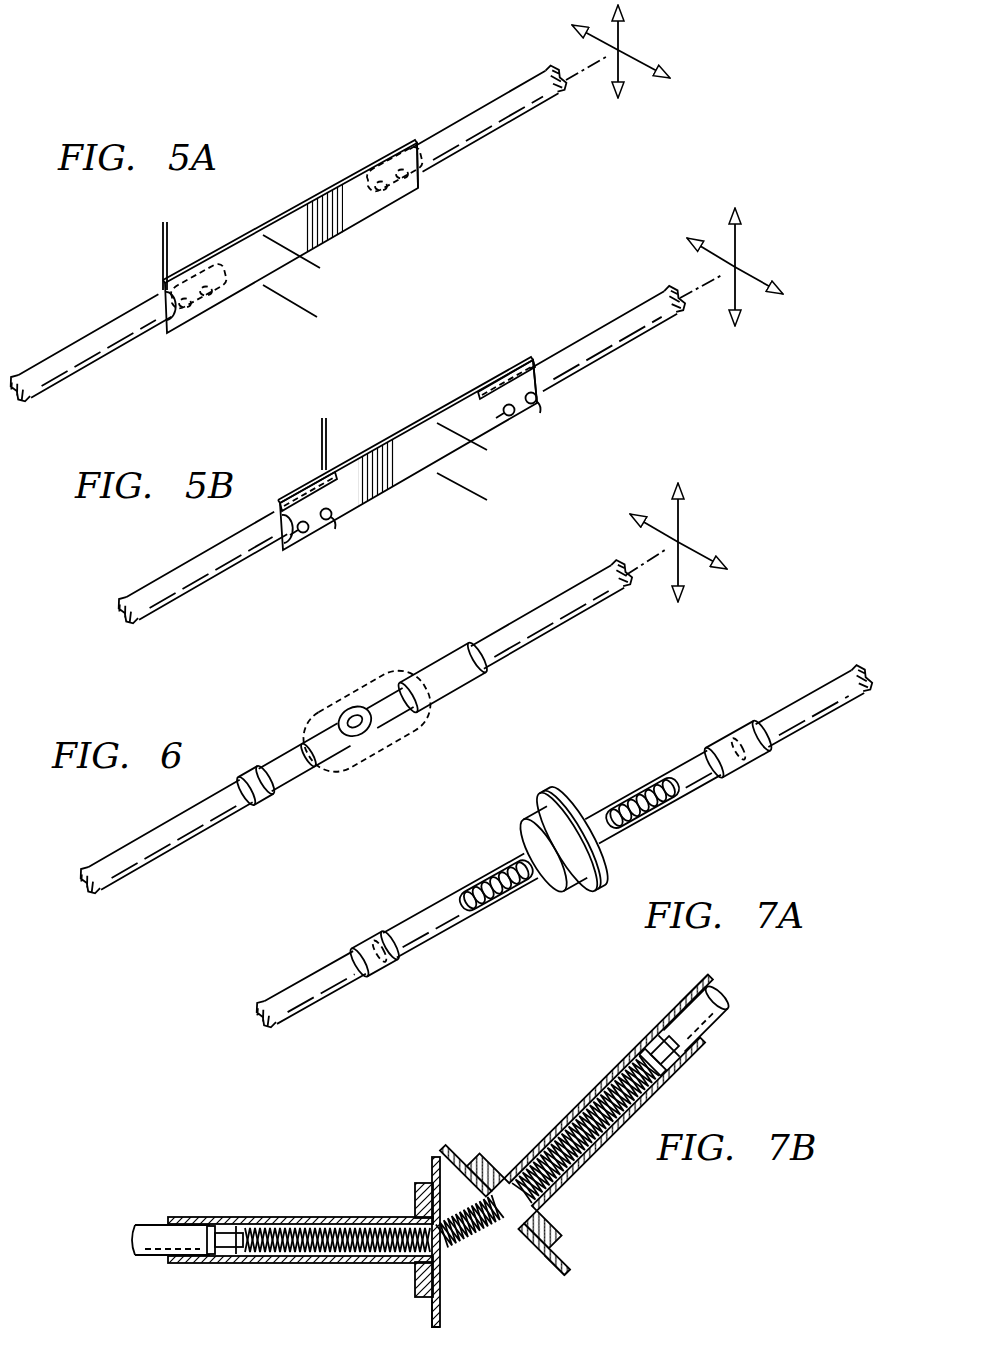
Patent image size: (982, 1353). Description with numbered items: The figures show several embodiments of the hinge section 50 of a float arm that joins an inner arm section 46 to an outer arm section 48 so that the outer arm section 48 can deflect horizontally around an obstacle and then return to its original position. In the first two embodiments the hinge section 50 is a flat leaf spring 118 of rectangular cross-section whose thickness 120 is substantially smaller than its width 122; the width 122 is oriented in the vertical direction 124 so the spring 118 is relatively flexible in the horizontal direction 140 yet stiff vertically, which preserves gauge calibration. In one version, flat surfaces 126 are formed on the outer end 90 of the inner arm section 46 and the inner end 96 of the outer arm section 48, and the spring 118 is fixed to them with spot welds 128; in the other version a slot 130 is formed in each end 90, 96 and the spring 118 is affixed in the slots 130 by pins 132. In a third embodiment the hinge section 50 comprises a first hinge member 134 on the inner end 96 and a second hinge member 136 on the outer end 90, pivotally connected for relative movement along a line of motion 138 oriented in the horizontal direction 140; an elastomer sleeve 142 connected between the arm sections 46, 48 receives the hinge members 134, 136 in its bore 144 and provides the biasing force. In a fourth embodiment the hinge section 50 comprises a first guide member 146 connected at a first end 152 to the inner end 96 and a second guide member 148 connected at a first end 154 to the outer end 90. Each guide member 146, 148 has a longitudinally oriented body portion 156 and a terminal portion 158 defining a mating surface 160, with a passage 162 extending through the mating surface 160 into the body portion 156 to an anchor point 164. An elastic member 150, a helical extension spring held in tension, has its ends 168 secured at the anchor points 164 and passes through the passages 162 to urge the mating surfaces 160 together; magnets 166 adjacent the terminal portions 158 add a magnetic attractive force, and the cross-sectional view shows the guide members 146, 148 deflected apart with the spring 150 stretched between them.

In FIG. 5A, the inner arm section 46 is at (60, 355).
In FIG. 5B, the inner arm section 46 is at (188, 561).
In FIG. 6, the inner arm section 46 is at (142, 832).
In FIG. 7A, the inner arm section 46 is at (303, 977).
In FIG. 7B, the inner arm section 46 is at (152, 1222).
In FIG. 5A, the outer arm section 48 is at (475, 117).
In FIG. 5B, the outer arm section 48 is at (627, 310).
In FIG. 6, the outer arm section 48 is at (565, 590).
In FIG. 7A, the outer arm section 48 is at (810, 685).
In FIG. 7B, the outer arm section 48 is at (726, 1023).
In FIG. 5A, the hinge section 50 is at (282, 231).
In FIG. 5B, the hinge section 50 is at (418, 459).
In FIG. 6, the hinge section 50 is at (351, 727).
In FIG. 5A, the outer end of inner arm section 90 is at (225, 268).
In FIG. 5B, the outer end of inner arm section 90 is at (290, 550).
In FIG. 6, the outer end of inner arm section 90 is at (271, 795).
In FIG. 7A, the outer end of inner arm section 90 is at (388, 930).
In FIG. 5A, the inner end of outer arm section 96 is at (390, 164).
In FIG. 5B, the inner end of outer arm section 96 is at (527, 383).
In FIG. 6, the inner end of outer arm section 96 is at (472, 645).
In FIG. 7A, the inner end of outer arm section 96 is at (758, 765).
In FIG. 7B, the inner end of outer arm section 96 is at (675, 1015).
In FIG. 5A, the flat leaf spring 118 is at (288, 228).
In FIG. 5B, the flat leaf spring 118 is at (413, 438).
In FIG. 5A, the thickness 120 is at (195, 252).
In FIG. 5B, the thickness 120 is at (355, 450).
In FIG. 5A, the width 122 is at (308, 269).
In FIG. 5B, the width 122 is at (483, 452).
In FIG. 5A, the vertical direction 124 is at (619, 34).
In FIG. 5B, the vertical direction 124 is at (738, 246).
In FIG. 6, the vertical direction 124 is at (683, 524).
In FIG. 5A, the flat surfaces 126 is at (370, 210).
In FIG. 5A, the spot welds 128 is at (191, 310).
In FIG. 5B, the slot 130 is at (302, 493).
In FIG. 5B, the pins 132 is at (332, 526).
In FIG. 6, the first hinge member 134 is at (393, 745).
In FIG. 6, the second hinge member 136 is at (327, 715).
In FIG. 6, the line of motion 138 is at (693, 574).
In FIG. 5A, the horizontal direction 140 is at (650, 65).
In FIG. 5B, the horizontal direction 140 is at (763, 285).
In FIG. 6, the horizontal direction 140 is at (696, 558).
In FIG. 6, the elastomer sleeve 142 is at (288, 805).
In FIG. 6, the bore 144 is at (235, 815).
In FIG. 7A, the first guide member 146 is at (738, 757).
In FIG. 7B, the first guide member 146 is at (610, 1084).
In FIG. 7A, the second guide member 148 is at (403, 929).
In FIG. 7B, the second guide member 148 is at (307, 1202).
In FIG. 7A, the elastic member 150 is at (500, 860).
In FIG. 7B, the elastic member 150 is at (478, 1252).
In FIG. 7A, the first end of first guide member 152 is at (715, 740).
In FIG. 7A, the first end of second guide member 154 is at (396, 972).
In FIG. 7A, the body portion 156 is at (442, 885).
In FIG. 7B, the body portion 156 is at (330, 1262).
In FIG. 7A, the terminal portion 158 is at (618, 845).
In FIG. 7B, the terminal portion 158 is at (430, 1312).
In FIG. 7B, the mating surface 160 is at (440, 1304).
In FIG. 7A, the passage 162 is at (507, 908).
In FIG. 7B, the anchor point 164 is at (245, 1260).
In FIG. 7A, the magnets 166 is at (530, 810).
In FIG. 7B, the magnets 166 is at (418, 1187).
In FIG. 7B, the ends of elastic member 168 is at (221, 1228).